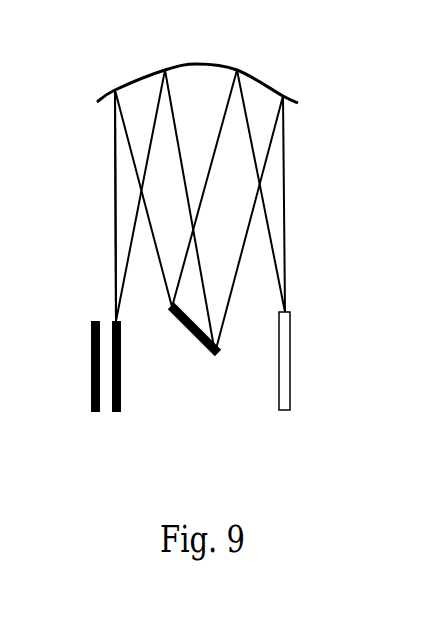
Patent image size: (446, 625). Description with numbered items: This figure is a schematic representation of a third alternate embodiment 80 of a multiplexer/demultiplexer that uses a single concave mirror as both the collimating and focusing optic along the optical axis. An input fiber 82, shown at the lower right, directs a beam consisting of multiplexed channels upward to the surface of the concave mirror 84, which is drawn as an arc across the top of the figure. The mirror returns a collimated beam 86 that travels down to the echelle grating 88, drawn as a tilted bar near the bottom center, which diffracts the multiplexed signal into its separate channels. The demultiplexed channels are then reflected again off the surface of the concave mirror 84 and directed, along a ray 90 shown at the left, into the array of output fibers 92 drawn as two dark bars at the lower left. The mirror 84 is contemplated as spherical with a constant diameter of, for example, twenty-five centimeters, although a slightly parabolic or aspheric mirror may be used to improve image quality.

The third alternate embodiment 80 is at (337, 160).
The input fiber 82 is at (287, 338).
The concave mirror 84 is at (226, 62).
The collimated beam 86 is at (240, 256).
The echelle grating 88 is at (188, 330).
The light ray 90 is at (135, 163).
The array of output fibers 92 is at (91, 343).